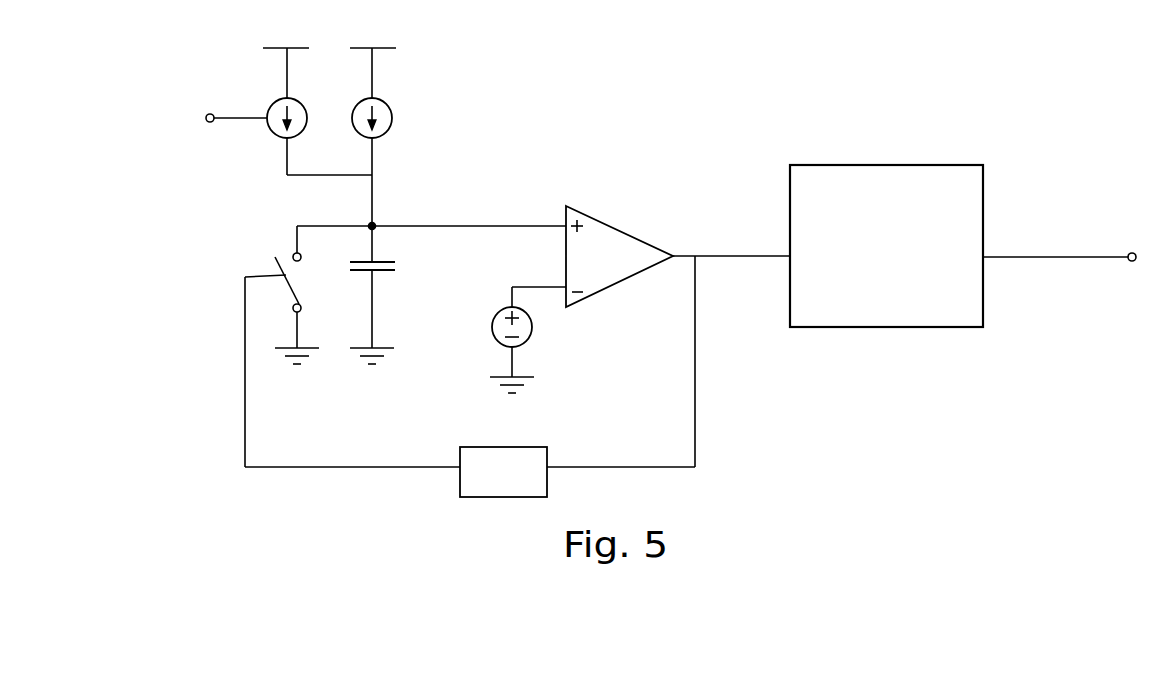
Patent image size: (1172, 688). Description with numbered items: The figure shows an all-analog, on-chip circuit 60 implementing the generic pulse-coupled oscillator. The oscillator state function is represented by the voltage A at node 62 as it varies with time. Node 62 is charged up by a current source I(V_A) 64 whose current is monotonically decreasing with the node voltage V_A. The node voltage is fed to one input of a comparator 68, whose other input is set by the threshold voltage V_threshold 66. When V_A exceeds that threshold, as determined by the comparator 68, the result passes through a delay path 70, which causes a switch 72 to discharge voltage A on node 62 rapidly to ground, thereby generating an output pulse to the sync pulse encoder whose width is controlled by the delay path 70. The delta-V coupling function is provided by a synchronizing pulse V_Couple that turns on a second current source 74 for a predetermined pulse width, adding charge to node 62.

The circuit 60 is at (616, 129).
The node 62 is at (365, 223).
The current source I(V_A) 64 is at (380, 107).
The V_threshold 66 is at (527, 323).
The comparator 68 is at (583, 267).
The delay path 70 is at (528, 457).
The switch 72 is at (300, 273).
The current source 74 is at (276, 101).